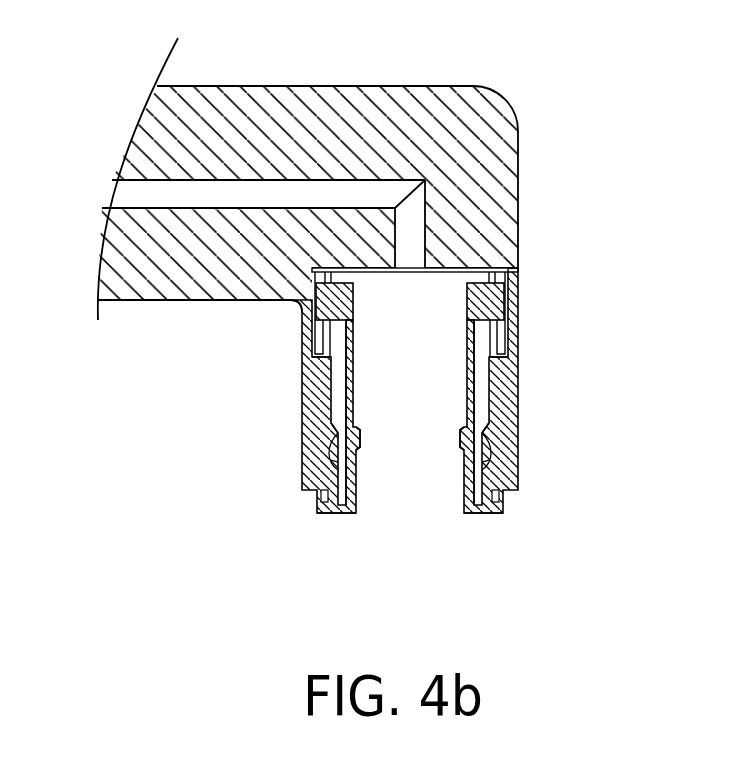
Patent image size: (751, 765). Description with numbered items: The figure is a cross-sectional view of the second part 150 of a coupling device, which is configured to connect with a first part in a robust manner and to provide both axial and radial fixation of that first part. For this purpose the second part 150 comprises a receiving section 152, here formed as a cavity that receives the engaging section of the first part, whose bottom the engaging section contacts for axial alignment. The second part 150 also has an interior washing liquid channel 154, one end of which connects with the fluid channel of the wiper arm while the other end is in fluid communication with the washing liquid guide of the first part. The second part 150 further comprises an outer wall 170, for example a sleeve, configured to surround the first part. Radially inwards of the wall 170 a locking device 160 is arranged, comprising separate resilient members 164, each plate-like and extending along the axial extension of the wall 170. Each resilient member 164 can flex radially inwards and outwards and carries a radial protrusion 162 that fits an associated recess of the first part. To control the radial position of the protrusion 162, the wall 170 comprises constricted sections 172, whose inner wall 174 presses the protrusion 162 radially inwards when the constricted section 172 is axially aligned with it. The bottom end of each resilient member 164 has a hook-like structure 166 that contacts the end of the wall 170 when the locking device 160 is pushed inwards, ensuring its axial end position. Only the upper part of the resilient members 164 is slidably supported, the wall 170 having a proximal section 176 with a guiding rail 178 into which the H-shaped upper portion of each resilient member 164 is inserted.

The second part 150 is at (615, 270).
The receiving section 152 is at (490, 335).
The washing liquid channel 154 is at (286, 197).
The locking device 160 is at (310, 365).
The radial protrusion 162 is at (307, 398).
The resilient member 164 is at (357, 397).
The hook-like structure 166 is at (316, 500).
The outer wall 170 is at (340, 432).
The constricted section 172 is at (310, 428).
The inner wall 174 is at (335, 462).
The proximal section 176 is at (523, 292).
The guiding rail 178 is at (410, 280).